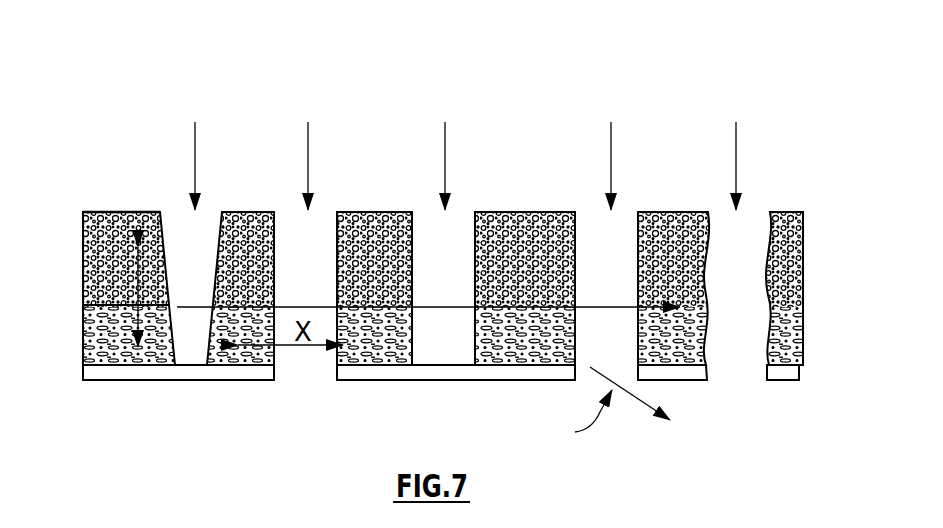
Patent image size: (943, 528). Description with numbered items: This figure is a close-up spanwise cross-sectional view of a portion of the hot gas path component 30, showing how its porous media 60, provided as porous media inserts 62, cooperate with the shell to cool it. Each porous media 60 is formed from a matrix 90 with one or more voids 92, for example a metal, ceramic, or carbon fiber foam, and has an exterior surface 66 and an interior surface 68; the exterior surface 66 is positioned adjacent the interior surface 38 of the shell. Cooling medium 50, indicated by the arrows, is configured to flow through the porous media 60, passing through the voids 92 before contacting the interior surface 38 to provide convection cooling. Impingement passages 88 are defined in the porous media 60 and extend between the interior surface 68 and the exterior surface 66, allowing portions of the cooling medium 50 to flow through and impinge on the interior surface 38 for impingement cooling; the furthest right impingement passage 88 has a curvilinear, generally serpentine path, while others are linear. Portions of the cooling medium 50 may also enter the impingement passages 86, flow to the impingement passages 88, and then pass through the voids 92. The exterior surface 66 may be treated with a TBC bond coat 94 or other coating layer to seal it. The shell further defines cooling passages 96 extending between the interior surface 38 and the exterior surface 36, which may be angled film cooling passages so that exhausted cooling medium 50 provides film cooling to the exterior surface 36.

The hot gas path component 30 is at (128, 90).
The exterior surface of the shell 36 is at (790, 380).
The interior surface of the shell 38 is at (775, 348).
The cooling medium 50 is at (445, 142).
The porous media 60 is at (93, 262).
The porous media insert 62 is at (93, 340).
The exterior surface of the porous media 66 is at (138, 365).
The interior surface of the porous media 68 is at (131, 212).
The impingement passages 86 is at (628, 203).
The impingement passages 88 is at (443, 358).
The matrix 90 is at (403, 348).
The voids 92 is at (235, 345).
The TBC bond coat 94 is at (513, 380).
The cooling passages 96 is at (576, 418).